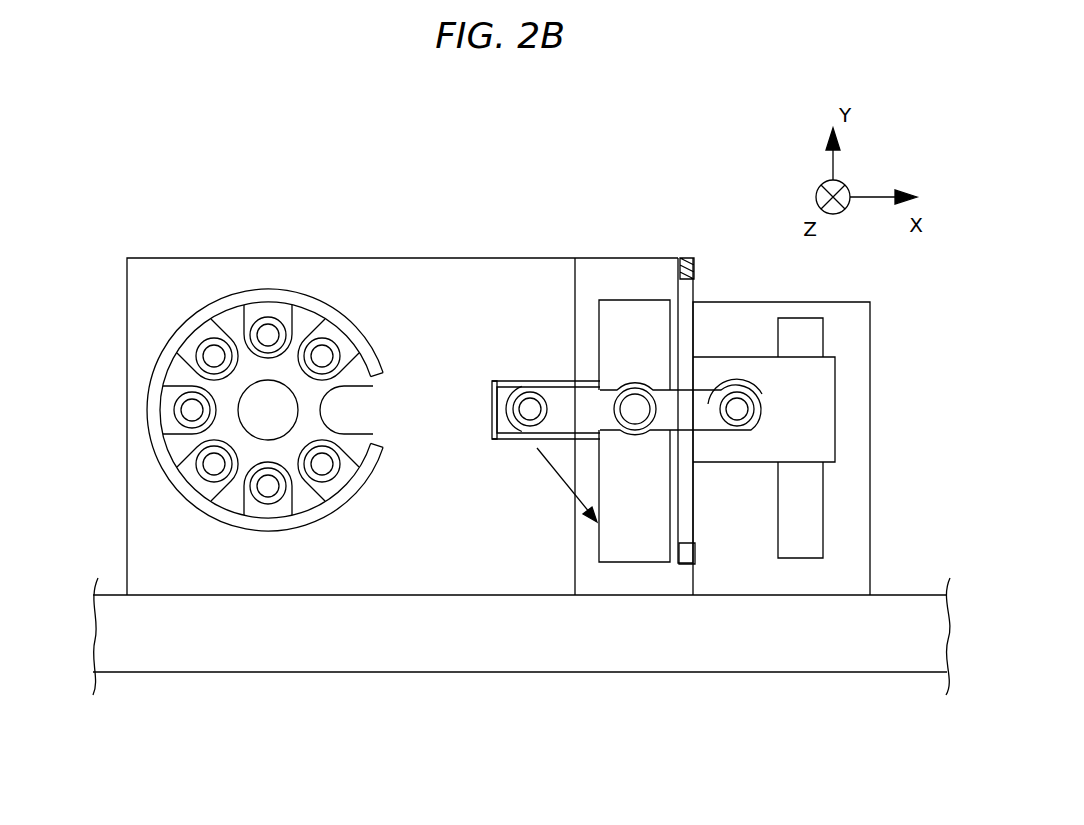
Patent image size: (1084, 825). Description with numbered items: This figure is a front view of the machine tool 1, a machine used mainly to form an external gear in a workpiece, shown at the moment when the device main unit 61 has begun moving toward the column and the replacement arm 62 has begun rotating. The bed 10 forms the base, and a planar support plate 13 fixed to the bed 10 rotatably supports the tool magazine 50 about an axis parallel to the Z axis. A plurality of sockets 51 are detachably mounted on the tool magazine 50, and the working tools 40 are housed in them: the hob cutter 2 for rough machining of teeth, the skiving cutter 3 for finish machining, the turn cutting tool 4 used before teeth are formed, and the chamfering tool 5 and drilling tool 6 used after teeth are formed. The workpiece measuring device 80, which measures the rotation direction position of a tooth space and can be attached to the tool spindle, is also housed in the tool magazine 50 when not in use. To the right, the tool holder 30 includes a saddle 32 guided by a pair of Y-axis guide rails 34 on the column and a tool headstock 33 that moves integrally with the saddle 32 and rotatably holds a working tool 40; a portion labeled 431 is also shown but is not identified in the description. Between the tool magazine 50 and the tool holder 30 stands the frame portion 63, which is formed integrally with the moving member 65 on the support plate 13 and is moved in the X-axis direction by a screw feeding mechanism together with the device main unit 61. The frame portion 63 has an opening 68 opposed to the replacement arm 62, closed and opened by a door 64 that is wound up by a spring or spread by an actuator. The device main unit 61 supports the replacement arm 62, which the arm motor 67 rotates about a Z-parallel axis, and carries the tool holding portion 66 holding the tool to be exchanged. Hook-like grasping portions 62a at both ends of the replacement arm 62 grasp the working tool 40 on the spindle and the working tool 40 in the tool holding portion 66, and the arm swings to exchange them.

The machine tool 1 is at (142, 220).
The bed 10 is at (885, 617).
The support plate 13 is at (312, 270).
The tool magazine 50 is at (153, 318).
The sockets 51 is at (196, 352).
The working tools 40 is at (503, 366).
The hob cutter 2 is at (738, 408).
The skiving cutter 3 is at (527, 407).
The turn cutting tool 4 is at (190, 411).
The chamfering tool 5 is at (212, 465).
The drilling tool 6 is at (266, 335).
The workpiece measuring device 80 is at (267, 486).
The tool holder 30 is at (878, 298).
The frame of processing unit 431 is at (855, 308).
The saddle 32 is at (817, 437).
The tool headstock 33 is at (748, 388).
The Y-axis guide rails 34 is at (803, 330).
The device main unit 61 is at (624, 315).
The replacement arm 62 is at (660, 403).
The grasping portions 62a is at (510, 397).
The frame portion 63 is at (696, 266).
The door 64 is at (684, 254).
The moving member 65 is at (600, 268).
The tool holding portion 66 is at (498, 440).
The arm motor 67 is at (637, 415).
The opening 68 is at (698, 542).